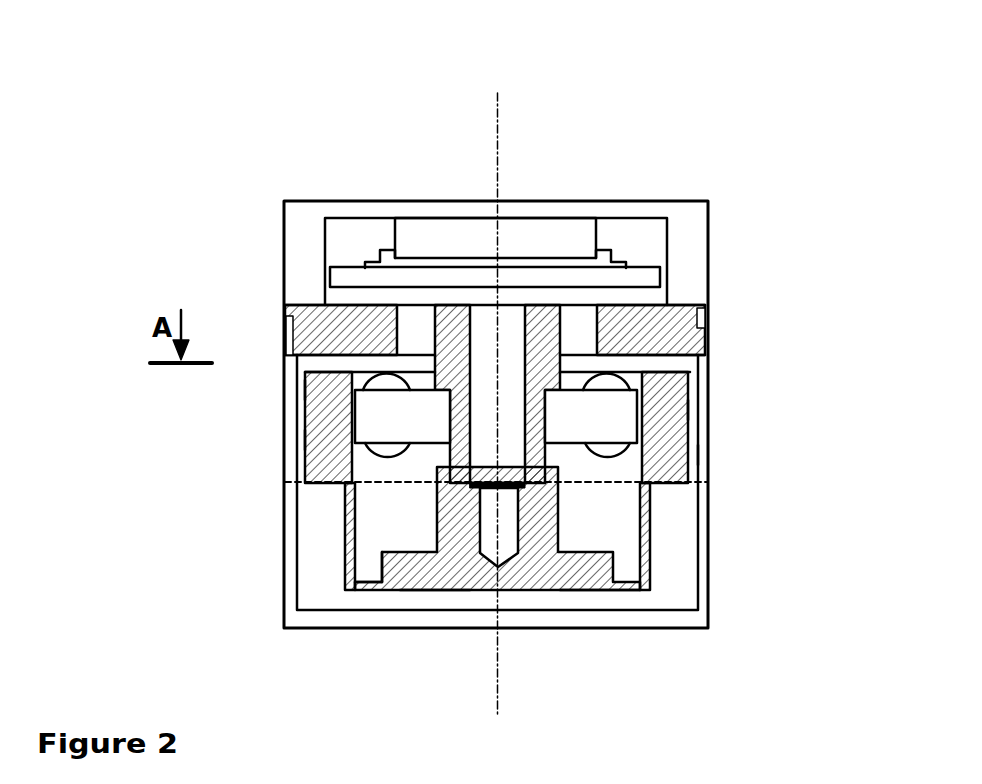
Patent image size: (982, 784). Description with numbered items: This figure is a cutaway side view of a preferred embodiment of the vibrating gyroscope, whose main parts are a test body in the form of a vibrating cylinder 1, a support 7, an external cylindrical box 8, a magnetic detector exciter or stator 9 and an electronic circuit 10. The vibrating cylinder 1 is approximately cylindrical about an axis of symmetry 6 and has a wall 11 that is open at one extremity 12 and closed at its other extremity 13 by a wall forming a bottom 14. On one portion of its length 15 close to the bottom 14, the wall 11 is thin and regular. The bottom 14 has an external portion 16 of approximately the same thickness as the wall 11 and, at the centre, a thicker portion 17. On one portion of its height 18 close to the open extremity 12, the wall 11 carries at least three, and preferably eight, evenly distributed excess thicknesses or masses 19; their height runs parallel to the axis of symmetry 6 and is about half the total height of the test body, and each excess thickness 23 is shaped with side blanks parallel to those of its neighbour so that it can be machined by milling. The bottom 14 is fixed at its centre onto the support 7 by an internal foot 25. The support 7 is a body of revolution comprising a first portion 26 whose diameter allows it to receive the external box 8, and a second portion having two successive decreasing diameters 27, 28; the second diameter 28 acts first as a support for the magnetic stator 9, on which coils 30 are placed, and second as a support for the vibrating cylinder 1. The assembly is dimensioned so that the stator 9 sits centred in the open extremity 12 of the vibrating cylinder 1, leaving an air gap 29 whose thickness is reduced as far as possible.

The vibrating cylinder 1 is at (343, 485).
The axis of symmetry 6 is at (497, 93).
The support 7 is at (640, 326).
The external cylindrical box 8 is at (706, 608).
The stator 9 is at (600, 418).
The electronic circuit 10 is at (540, 235).
The wall 11 is at (305, 440).
The open extremity 12 is at (300, 357).
The other extremity 13 is at (345, 568).
The bottom 14 is at (435, 578).
The portion of its length 15 is at (345, 537).
The external portion 16 is at (385, 578).
The thicker portion 17 is at (597, 578).
The portion of its height 18 is at (305, 393).
The excess thicknesses 19 is at (692, 412).
The excess thickness 23 is at (690, 435).
The internal foot 25 is at (560, 510).
The first portion 26 is at (696, 322).
The first decreasing diameter 27 is at (462, 342).
The second decreasing diameter 28 is at (695, 457).
The air gap 29 is at (688, 380).
The coils 30 is at (590, 453).